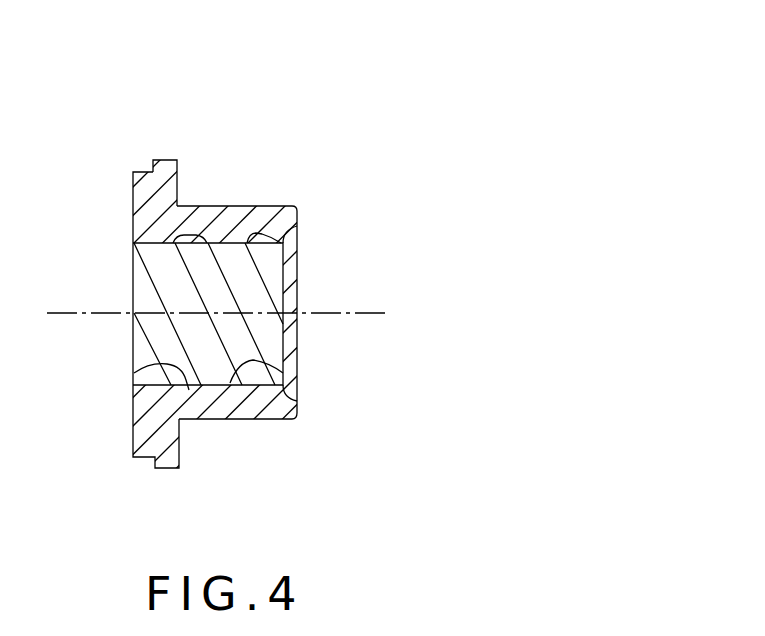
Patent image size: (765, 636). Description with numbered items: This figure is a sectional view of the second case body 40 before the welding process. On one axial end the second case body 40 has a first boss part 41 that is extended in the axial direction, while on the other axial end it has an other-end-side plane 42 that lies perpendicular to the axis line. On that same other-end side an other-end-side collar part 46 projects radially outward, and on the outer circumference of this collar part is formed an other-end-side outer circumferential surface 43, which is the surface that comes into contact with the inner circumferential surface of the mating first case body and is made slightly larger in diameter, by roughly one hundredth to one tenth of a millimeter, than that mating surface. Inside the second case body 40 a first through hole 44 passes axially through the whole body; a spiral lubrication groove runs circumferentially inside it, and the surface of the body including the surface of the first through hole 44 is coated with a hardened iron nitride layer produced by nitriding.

The second case body 40 is at (313, 117).
The first boss part 41 is at (253, 206).
The other-end-side plane 42 is at (131, 205).
The other-end-side outer circumferential surface 43 is at (167, 158).
The first through hole 44 is at (134, 373).
The other-end-side collar part 46 is at (177, 183).